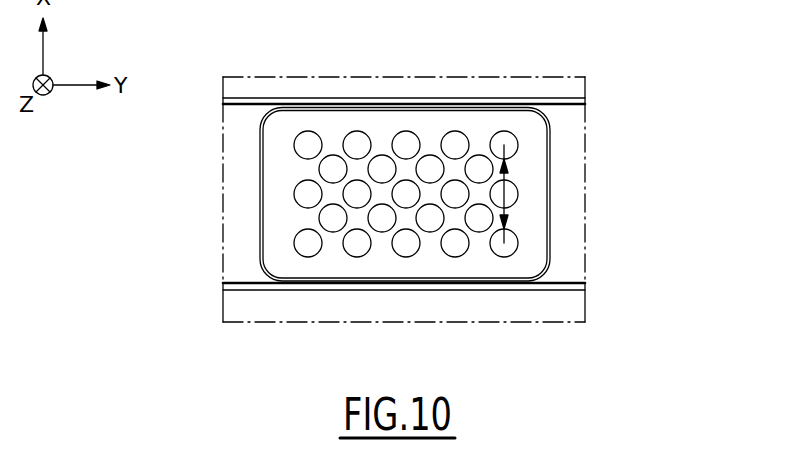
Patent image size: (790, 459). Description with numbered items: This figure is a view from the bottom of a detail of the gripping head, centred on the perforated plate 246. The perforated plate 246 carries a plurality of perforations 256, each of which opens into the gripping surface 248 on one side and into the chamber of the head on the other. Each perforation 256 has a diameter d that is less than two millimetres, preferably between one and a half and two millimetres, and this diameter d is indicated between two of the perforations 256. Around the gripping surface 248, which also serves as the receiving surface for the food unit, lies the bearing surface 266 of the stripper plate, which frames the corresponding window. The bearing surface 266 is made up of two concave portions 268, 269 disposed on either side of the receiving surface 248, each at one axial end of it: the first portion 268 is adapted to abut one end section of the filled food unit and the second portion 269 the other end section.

The perforated plate 246 is at (568, 247).
The gripping surface 248 is at (280, 263).
The perforations 256 is at (504, 145).
The bearing surface 266 is at (238, 157).
The first portion of the bearing surface 268 is at (572, 208).
The second portion of the bearing surface 269 is at (238, 257).
The diameter d is at (505, 192).